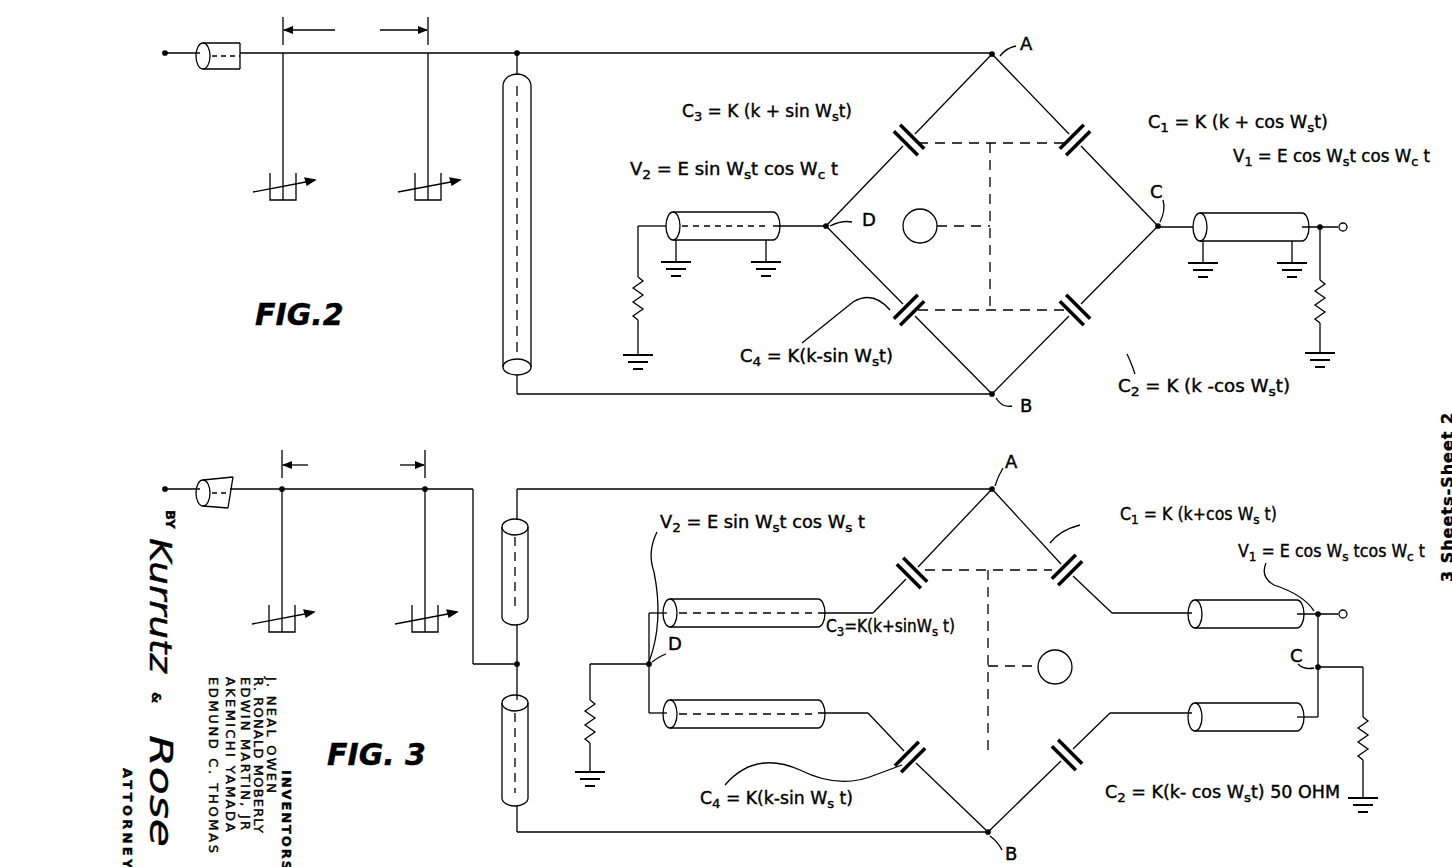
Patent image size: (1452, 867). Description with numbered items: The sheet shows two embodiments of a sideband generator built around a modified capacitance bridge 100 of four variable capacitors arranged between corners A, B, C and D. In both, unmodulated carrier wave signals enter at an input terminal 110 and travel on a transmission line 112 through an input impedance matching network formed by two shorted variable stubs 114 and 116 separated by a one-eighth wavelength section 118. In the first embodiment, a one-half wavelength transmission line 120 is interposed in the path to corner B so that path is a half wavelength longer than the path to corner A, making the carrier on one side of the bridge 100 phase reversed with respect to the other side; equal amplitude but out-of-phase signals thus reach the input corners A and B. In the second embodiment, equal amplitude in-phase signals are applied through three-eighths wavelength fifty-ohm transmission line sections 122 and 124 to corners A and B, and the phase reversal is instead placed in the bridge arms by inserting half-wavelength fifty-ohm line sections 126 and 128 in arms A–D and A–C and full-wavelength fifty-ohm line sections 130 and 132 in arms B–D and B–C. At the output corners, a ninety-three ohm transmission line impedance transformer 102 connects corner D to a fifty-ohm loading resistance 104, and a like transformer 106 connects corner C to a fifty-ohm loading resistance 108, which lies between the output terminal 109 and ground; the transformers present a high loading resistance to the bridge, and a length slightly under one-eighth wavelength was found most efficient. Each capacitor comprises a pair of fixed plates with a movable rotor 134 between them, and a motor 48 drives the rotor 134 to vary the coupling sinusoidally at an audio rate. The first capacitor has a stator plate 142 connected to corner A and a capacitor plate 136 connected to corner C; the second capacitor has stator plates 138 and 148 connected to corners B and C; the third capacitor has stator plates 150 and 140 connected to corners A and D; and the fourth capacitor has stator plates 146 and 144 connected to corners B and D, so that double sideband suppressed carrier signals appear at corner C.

In FIG. 2, the motor 48 is at (932, 212).
In FIG. 3, the motor 48 is at (1066, 652).
In FIG. 2, the capacitance bridge 100 is at (1040, 100).
In FIG. 3, the capacitance bridge 100 is at (1015, 525).
In FIG. 2, the 93 ohm transmission line impedance transformer 102 is at (768, 242).
In FIG. 2, the 50-ohm loading resistance 104 is at (635, 305).
In FIG. 3, the 50-ohm loading resistance 104 is at (600, 708).
In FIG. 2, the 93 ohm transmission line impedance transformer 106 is at (1226, 212).
In FIG. 2, the 50-ohm loading resistance 108 is at (1315, 301).
In FIG. 3, the 50-ohm loading resistance 108 is at (1358, 736).
In FIG. 2, the output terminal 109 is at (1348, 225).
In FIG. 3, the output terminal 109 is at (1348, 612).
In FIG. 2, the input terminal 110 is at (165, 58).
In FIG. 3, the input terminal 110 is at (168, 483).
In FIG. 2, the transmission line 112 is at (225, 66).
In FIG. 3, the transmission line 112 is at (222, 476).
In FIG. 2, the shorted variable stub 114 is at (280, 145).
In FIG. 3, the shorted variable stub 114 is at (283, 562).
In FIG. 2, the shorted variable stub 116 is at (428, 135).
In FIG. 3, the shorted variable stub 116 is at (425, 590).
In FIG. 2, the one-eighth wavelength section 118 is at (384, 58).
In FIG. 3, the one-eighth wavelength section 118 is at (393, 496).
In FIG. 2, the one-half wavelength transmission line 120 is at (503, 322).
In FIG. 3, the 3/8-wavelength 50-ohm transmission line section 122 is at (530, 608).
In FIG. 3, the 3/8-wavelength 50-ohm transmission line section 124 is at (530, 728).
In FIG. 3, the half-wavelength 50-ohm transmission line section 126 is at (805, 600).
In FIG. 3, the half-wavelength 50-ohm transmission line section 128 is at (1212, 605).
In FIG. 3, the full-wavelength 50-ohm transmission line section 130 is at (805, 714).
In FIG. 3, the full-wavelength 50-ohm transmission line section 132 is at (1225, 705).
In FIG. 2, the movable rotor 134 is at (920, 150).
In FIG. 3, the movable rotor 134 is at (922, 590).
In FIG. 2, the capacitor plate 136 is at (1072, 160).
In FIG. 3, the capacitor plate 136 is at (1086, 570).
In FIG. 2, the stator plate 138 is at (1075, 325).
In FIG. 3, the stator plate 138 is at (1065, 768).
In FIG. 2, the stator plate 140 is at (885, 137).
In FIG. 3, the stator plate 140 is at (906, 569).
In FIG. 2, the stator plate 142 is at (1070, 125).
In FIG. 3, the stator plate 142 is at (1062, 550).
In FIG. 2, the stator plate 144 is at (900, 298).
In FIG. 3, the stator plate 144 is at (905, 740).
In FIG. 2, the stator plate 146 is at (906, 322).
In FIG. 3, the stator plate 146 is at (908, 772).
In FIG. 2, the stator plate 148 is at (1088, 312).
In FIG. 3, the stator plate 148 is at (1082, 752).
In FIG. 2, the stator plate 150 is at (903, 130).
In FIG. 3, the stator plate 150 is at (915, 562).